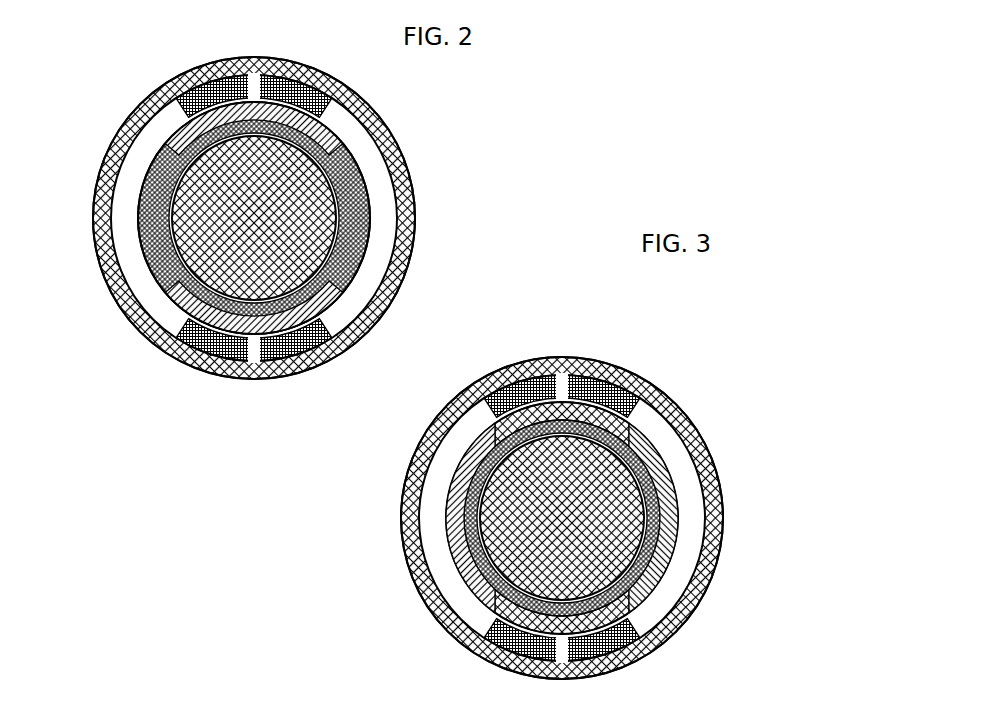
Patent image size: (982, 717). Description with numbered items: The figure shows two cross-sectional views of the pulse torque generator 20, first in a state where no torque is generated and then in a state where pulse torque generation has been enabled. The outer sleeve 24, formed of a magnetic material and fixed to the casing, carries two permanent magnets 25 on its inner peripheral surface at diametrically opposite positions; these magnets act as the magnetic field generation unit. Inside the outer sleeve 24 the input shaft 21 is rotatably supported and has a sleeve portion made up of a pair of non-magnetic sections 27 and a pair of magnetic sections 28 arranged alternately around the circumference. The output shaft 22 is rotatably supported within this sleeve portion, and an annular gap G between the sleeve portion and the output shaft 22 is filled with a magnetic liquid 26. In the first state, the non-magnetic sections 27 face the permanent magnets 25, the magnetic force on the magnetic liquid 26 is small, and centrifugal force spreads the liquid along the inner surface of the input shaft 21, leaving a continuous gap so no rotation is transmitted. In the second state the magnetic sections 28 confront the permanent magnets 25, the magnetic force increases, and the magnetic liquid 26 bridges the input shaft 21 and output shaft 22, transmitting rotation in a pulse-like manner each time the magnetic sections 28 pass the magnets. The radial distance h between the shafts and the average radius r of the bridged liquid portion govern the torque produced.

In FIG. 2, the pulse torque generator 20 is at (315, 218).
In FIG. 3, the pulse torque generator 20 is at (562, 479).
In FIG. 2, the input shaft 21 is at (320, 218).
In FIG. 2, the output shaft 22 is at (193, 218).
In FIG. 3, the output shaft 22 is at (499, 518).
In FIG. 2, the outer sleeve 24 is at (254, 218).
In FIG. 3, the outer sleeve 24 is at (562, 518).
In FIG. 2, the permanent magnet 25 is at (292, 218).
In FIG. 3, the permanent magnet 25 is at (597, 515).
In FIG. 2, the magnetic liquid 26 is at (223, 222).
In FIG. 3, the magnetic liquid 26 is at (607, 518).
In FIG. 2, the non-magnetic section 27 is at (311, 218).
In FIG. 3, the non-magnetic section 27 is at (575, 513).
In FIG. 2, the magnetic section 28 is at (253, 218).
In FIG. 3, the magnetic section 28 is at (616, 496).
In FIG. 2, the gap G is at (107, 151).
In FIG. 3, the gap G is at (422, 596).
In FIG. 3, the average radius r is at (545, 477).
In FIG. 3, the radial distance h is at (684, 451).